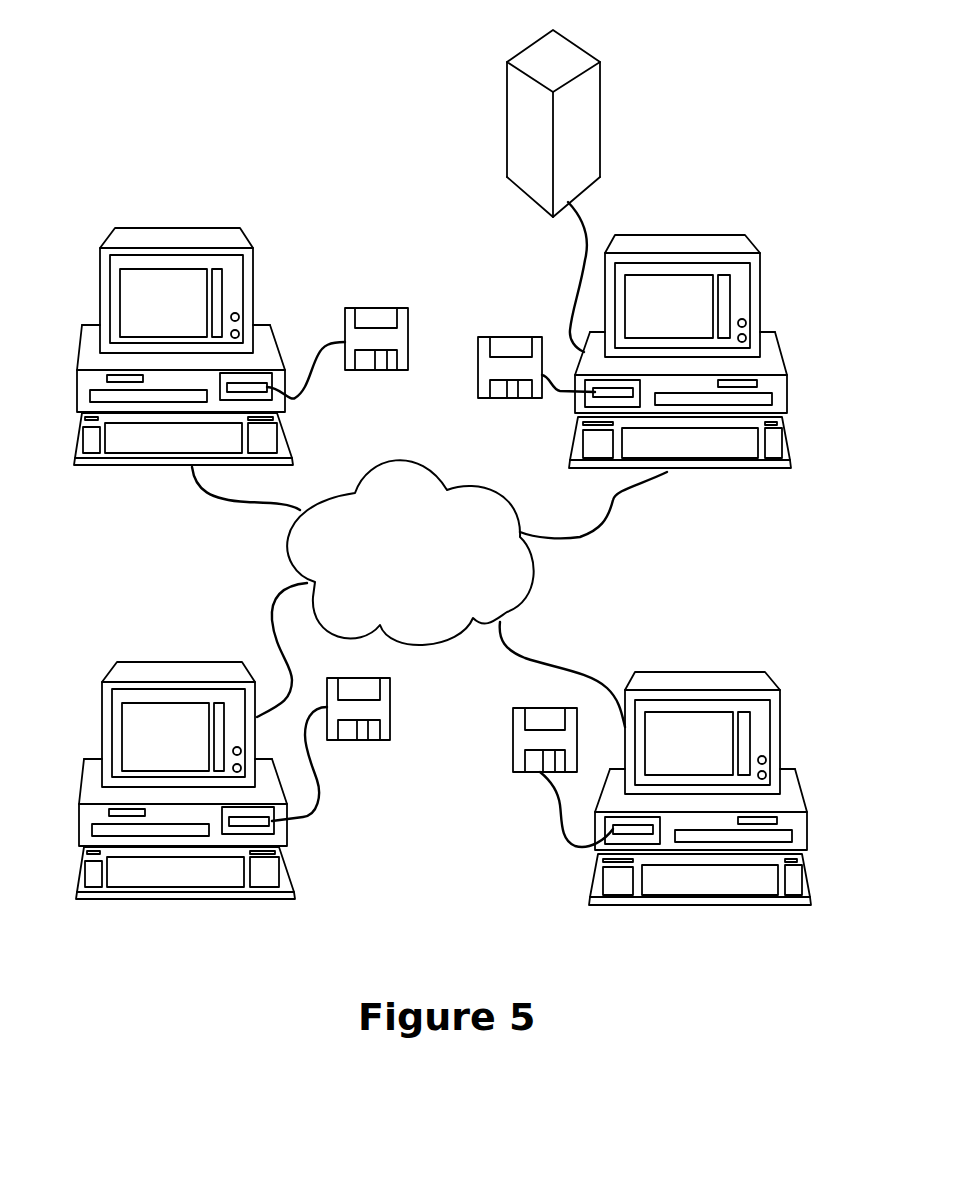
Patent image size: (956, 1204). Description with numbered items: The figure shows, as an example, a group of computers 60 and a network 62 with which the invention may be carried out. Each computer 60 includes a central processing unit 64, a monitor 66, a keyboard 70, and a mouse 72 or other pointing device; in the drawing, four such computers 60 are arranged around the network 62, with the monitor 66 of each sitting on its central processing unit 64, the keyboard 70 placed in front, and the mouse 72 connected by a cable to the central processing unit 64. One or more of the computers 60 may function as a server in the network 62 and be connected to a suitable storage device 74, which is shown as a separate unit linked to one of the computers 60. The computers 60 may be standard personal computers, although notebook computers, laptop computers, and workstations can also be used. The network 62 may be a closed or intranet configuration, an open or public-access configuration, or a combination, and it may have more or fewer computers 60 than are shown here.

The computer 60 is at (145, 150).
The network 62 is at (392, 143).
The central processing unit 64 is at (80, 336).
The monitor 66 is at (253, 254).
The keyboard 70 is at (290, 441).
The mouse 72 is at (343, 316).
The storage device 74 is at (602, 88).